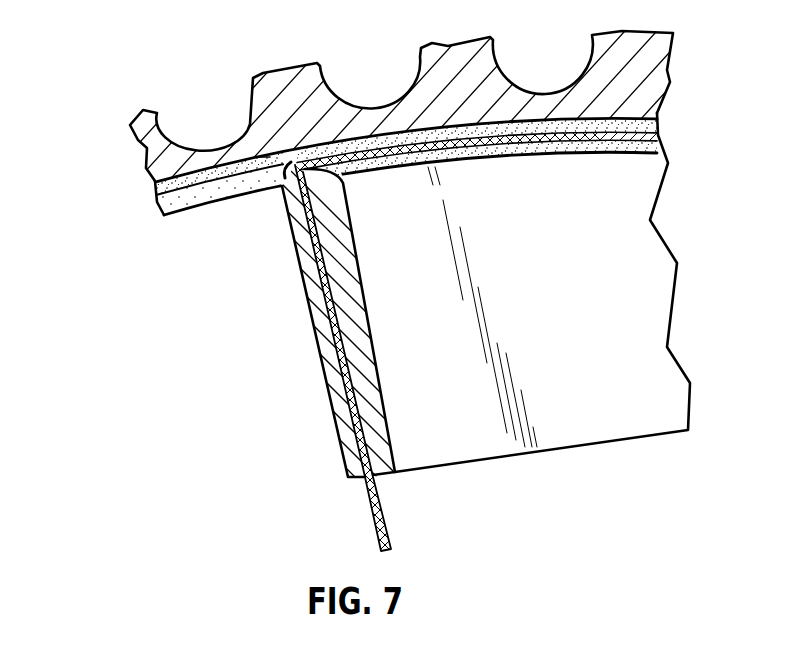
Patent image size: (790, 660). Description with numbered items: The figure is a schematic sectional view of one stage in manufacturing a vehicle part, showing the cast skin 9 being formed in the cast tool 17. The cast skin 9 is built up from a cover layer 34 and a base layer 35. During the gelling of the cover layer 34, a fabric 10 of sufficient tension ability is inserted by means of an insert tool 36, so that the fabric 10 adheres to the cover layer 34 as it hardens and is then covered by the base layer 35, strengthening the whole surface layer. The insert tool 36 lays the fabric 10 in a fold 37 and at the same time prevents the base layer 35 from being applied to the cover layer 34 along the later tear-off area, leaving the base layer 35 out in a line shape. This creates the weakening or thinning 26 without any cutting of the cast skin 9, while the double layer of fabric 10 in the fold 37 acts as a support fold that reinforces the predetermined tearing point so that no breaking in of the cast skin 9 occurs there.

The cast skin 9 is at (682, 151).
The fabric 10 is at (515, 138).
The cast tool 17 is at (147, 150).
The weakening or thinning 26 is at (261, 155).
The cover layer 34 is at (155, 186).
The base layer 35 is at (179, 207).
The insert tool 36 is at (320, 317).
The fold 37 is at (318, 170).